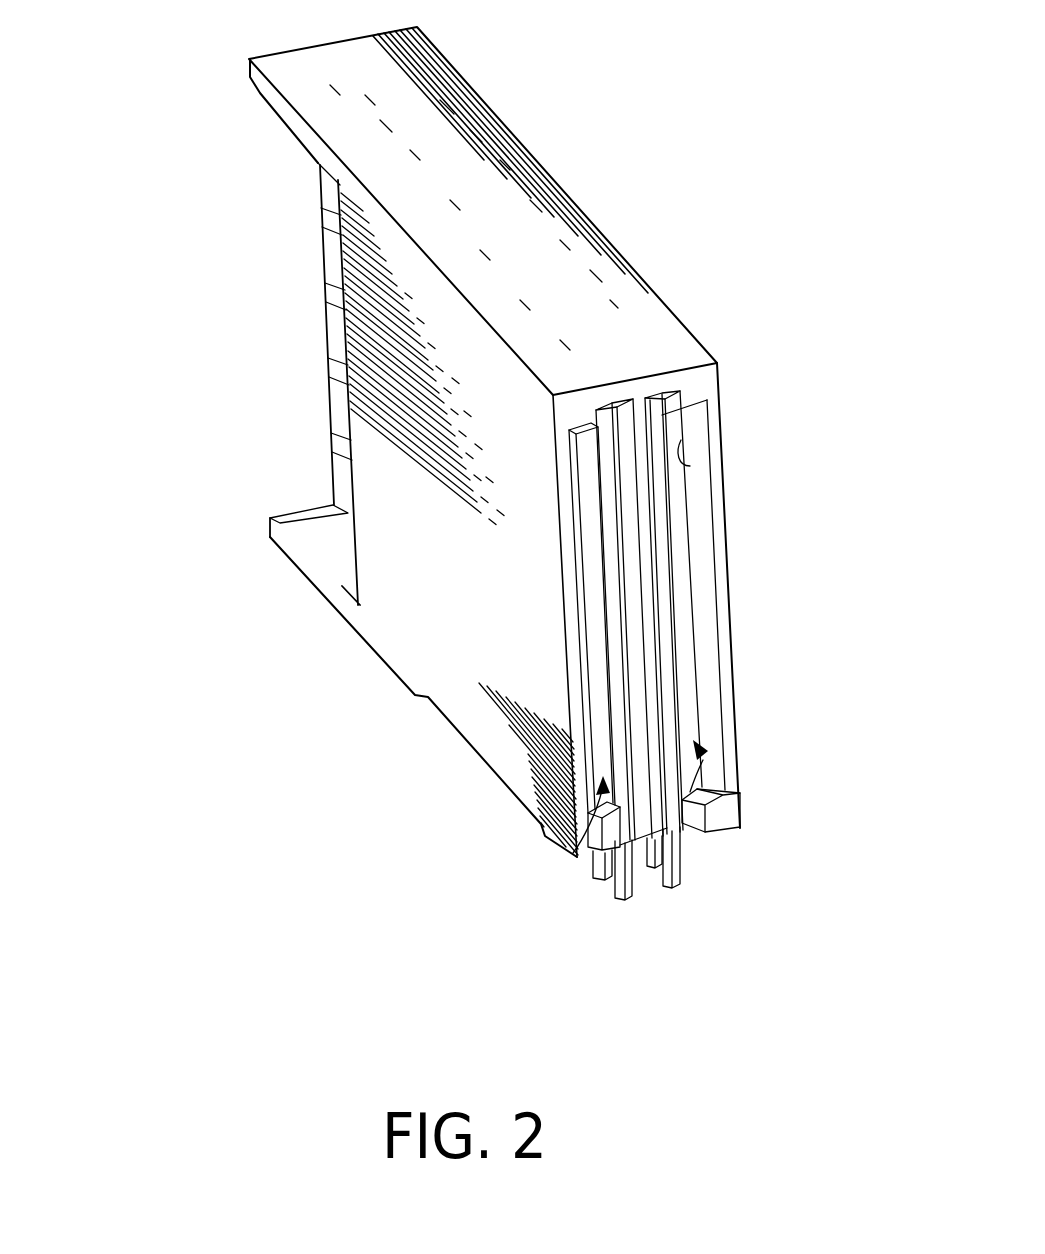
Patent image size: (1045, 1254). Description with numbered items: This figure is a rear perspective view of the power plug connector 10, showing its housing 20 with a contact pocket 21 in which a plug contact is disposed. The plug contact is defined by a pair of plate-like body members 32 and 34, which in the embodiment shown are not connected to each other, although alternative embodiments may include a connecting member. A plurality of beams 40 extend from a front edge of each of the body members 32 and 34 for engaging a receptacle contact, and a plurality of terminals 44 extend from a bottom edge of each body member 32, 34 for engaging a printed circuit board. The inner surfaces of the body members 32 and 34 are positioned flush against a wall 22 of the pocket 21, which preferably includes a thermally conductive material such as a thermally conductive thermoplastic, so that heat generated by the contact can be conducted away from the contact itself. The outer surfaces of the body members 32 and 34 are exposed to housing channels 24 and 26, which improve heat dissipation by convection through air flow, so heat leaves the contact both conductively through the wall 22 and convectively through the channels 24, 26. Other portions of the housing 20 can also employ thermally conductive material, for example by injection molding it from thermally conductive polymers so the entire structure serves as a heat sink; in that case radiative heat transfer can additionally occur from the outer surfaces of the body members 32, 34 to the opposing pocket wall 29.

The power plug connector 10 is at (132, 196).
The housing 20 is at (558, 182).
The contact pocket 21 is at (613, 400).
The wall 22 is at (642, 522).
The housing channel 24 is at (704, 760).
The housing channel 26 is at (573, 853).
The pocket wall 29 is at (690, 466).
The plate-like body member 32 is at (673, 628).
The plate-like body member 34 is at (618, 770).
The beams 40 is at (325, 330).
The terminals 44 is at (677, 887).